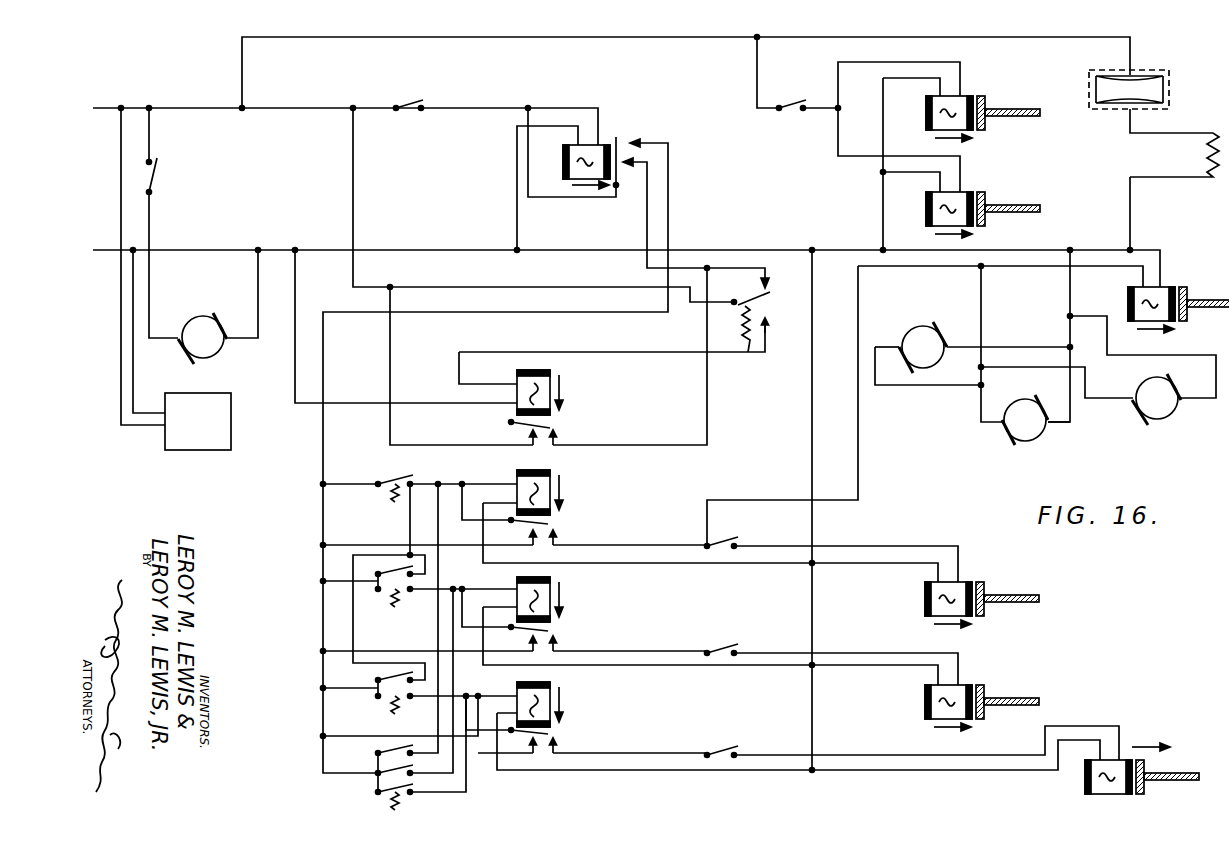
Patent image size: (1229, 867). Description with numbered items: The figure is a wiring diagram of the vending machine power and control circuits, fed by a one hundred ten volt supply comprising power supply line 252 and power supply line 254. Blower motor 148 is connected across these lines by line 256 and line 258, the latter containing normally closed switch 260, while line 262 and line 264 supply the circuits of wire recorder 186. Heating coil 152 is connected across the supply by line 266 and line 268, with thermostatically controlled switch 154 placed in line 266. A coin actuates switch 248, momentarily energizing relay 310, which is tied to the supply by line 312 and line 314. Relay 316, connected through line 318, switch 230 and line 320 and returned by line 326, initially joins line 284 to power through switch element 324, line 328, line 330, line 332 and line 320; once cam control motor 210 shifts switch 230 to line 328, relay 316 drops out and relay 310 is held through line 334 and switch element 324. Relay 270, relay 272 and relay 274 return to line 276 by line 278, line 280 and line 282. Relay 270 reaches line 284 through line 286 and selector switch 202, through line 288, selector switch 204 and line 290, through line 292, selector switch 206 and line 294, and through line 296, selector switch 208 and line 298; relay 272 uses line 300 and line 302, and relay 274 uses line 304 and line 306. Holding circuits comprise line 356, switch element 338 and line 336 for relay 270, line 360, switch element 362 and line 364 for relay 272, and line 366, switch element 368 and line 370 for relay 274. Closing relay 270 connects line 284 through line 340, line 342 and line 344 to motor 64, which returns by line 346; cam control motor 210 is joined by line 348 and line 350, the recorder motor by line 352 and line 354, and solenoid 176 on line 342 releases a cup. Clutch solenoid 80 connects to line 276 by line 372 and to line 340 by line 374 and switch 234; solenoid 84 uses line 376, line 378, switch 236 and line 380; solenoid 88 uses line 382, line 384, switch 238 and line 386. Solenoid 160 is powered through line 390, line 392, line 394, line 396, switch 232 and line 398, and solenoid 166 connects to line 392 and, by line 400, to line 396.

The power supply line 252 is at (108, 108).
The power supply line 254 is at (106, 251).
The line 262 is at (121, 178).
The line 264 is at (133, 384).
The normally closed switch 260 is at (154, 178).
The line 258 is at (149, 300).
The line 256 is at (258, 300).
The blower motor 148 is at (222, 347).
The wire recorder 186 is at (198, 433).
The switch 248 is at (416, 101).
The line 266 is at (627, 40).
The line 312 is at (600, 119).
The relay 310 is at (563, 166).
The switch element 324 is at (625, 139).
The line 334 is at (599, 198).
The line 314 is at (517, 237).
The line 320 is at (353, 196).
The line 284 is at (668, 188).
The line 328 is at (647, 226).
The line 398 is at (757, 70).
The switch 232 is at (799, 103).
The line 396 is at (822, 109).
The line 400 is at (935, 60).
The solenoid 166 is at (926, 108).
The line 390 is at (917, 177).
The line 394 is at (965, 165).
The line 392 is at (883, 212).
The solenoid 160 is at (926, 210).
The thermostatically controlled switch 154 is at (1170, 88).
The heating coil 152 is at (1207, 152).
The line 268 is at (1130, 215).
The switch 230 is at (765, 302).
The line 318 is at (600, 352).
The line 332 is at (390, 366).
The relay 316 is at (552, 376).
The line 326 is at (418, 403).
The line 330 is at (707, 402).
The relay 270 is at (552, 470).
The line 276 is at (812, 425).
The line 342 is at (858, 300).
The cam control motor 210 is at (915, 325).
The line 344 is at (981, 318).
The line 350 is at (1045, 347).
The solenoid 176 is at (1128, 298).
The line 354 is at (1107, 342).
The line 348 is at (920, 386).
The line 352 is at (1088, 395).
The line 346 is at (1070, 410).
The motor 64 is at (1030, 439).
The line 286 is at (340, 483).
The selector switch 202 is at (395, 481).
The line 356 is at (470, 504).
The switch element 338 is at (552, 534).
The line 336 is at (340, 544).
The line 288 is at (408, 542).
The selector switch 204 is at (393, 570).
The line 296 is at (438, 575).
The line 300 is at (478, 590).
The relay 272 is at (552, 587).
The line 360 is at (470, 610).
The switch element 362 is at (552, 632).
The line 290 is at (330, 582).
The line 292 is at (353, 633).
The line 364 is at (405, 650).
The selector switch 206 is at (392, 678).
The line 302 is at (455, 690).
The line 304 is at (500, 696).
The relay 274 is at (552, 691).
The line 366 is at (480, 720).
The switch element 368 is at (552, 735).
The line 294 is at (340, 689).
The line 370 is at (372, 736).
The selector switch 208 is at (388, 751).
The line 298 is at (372, 775).
The line 306 is at (468, 779).
The line 386 is at (612, 755).
The line 340 is at (648, 544).
The switch 234 is at (722, 540).
The line 278 is at (700, 565).
The line 374 is at (882, 546).
The line 372 is at (890, 566).
The clutch solenoid 80 is at (925, 600).
The line 380 is at (635, 651).
The switch 236 is at (720, 646).
The line 280 is at (715, 667).
The line 378 is at (860, 653).
The line 376 is at (876, 668).
The solenoid 84 is at (925, 703).
The switch 238 is at (720, 748).
The line 282 is at (715, 770).
The line 384 is at (912, 756).
The line 382 is at (905, 771).
The solenoid 88 is at (1086, 780).